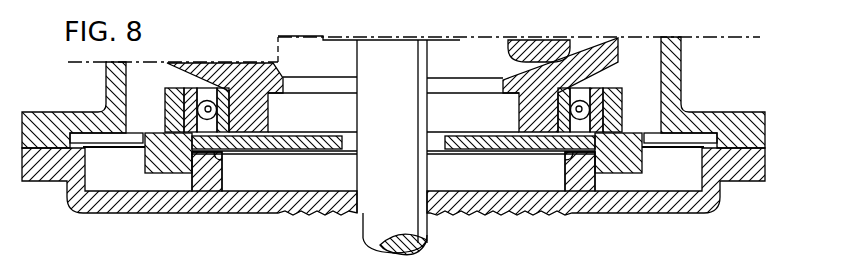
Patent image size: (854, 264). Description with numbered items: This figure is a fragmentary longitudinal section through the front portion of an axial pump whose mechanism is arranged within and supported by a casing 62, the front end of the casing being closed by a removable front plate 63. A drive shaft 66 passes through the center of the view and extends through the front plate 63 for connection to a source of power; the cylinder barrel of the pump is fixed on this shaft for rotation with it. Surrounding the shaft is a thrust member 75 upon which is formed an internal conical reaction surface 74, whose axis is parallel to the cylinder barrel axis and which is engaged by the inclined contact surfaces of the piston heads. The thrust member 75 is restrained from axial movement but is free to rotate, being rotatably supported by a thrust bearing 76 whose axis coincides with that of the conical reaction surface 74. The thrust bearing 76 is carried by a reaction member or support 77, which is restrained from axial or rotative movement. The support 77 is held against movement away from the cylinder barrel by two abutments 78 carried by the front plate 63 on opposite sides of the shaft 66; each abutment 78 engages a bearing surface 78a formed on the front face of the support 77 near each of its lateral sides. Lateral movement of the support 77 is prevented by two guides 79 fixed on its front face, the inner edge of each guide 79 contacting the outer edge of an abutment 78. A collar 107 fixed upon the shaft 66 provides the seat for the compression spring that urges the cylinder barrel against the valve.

The casing 62 is at (668, 93).
The front plate 63 is at (678, 200).
The drive shaft 66 is at (388, 108).
The conical reaction surface 74 is at (517, 71).
The thrust member 75 is at (236, 72).
The thrust bearing 76 is at (600, 90).
The support 77 is at (500, 140).
The abutment 78 is at (208, 168).
The bearing surface 78a is at (213, 157).
The guide 79 is at (163, 163).
The collar 107 is at (437, 38).